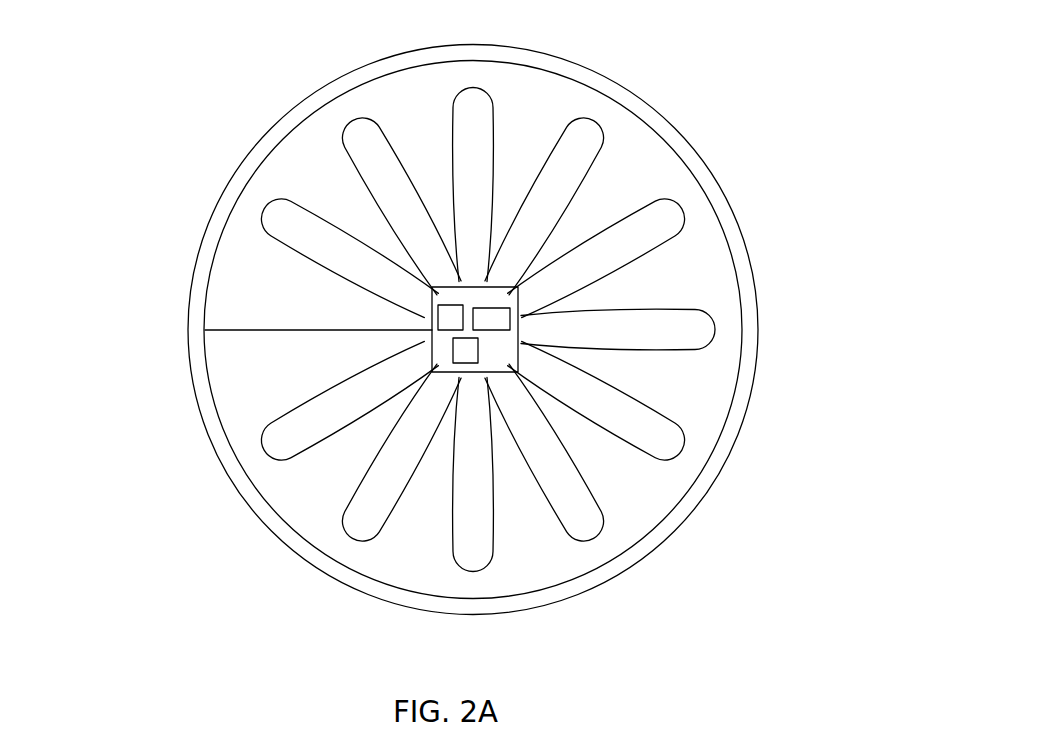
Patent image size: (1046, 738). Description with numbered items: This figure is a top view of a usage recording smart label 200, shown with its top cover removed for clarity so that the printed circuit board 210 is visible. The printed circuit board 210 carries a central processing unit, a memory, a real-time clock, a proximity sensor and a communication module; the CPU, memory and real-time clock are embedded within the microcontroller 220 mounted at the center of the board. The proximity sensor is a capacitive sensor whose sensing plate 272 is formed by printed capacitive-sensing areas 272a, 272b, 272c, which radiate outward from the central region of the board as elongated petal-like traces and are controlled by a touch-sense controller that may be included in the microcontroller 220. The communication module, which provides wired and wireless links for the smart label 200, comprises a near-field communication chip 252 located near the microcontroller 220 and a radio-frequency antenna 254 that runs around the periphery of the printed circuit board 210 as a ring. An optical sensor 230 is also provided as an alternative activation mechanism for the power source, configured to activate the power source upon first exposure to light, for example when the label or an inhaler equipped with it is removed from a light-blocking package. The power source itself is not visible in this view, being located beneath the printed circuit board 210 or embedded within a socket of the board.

The usage recording smart label 200 is at (760, 85).
The printed circuit board 210 is at (713, 257).
The microcontroller 220 is at (499, 308).
The optical sensor 230 is at (447, 316).
The near-field communication (NFC) chip 252 is at (477, 357).
The radio-frequency (RF) antenna 254 is at (203, 265).
The sensing plate 272 is at (393, 373).
The printed capacitive-sensing area 272a is at (273, 430).
The printed capacitive-sensing area 272b is at (362, 525).
The printed capacitive-sensing area 272c is at (482, 537).